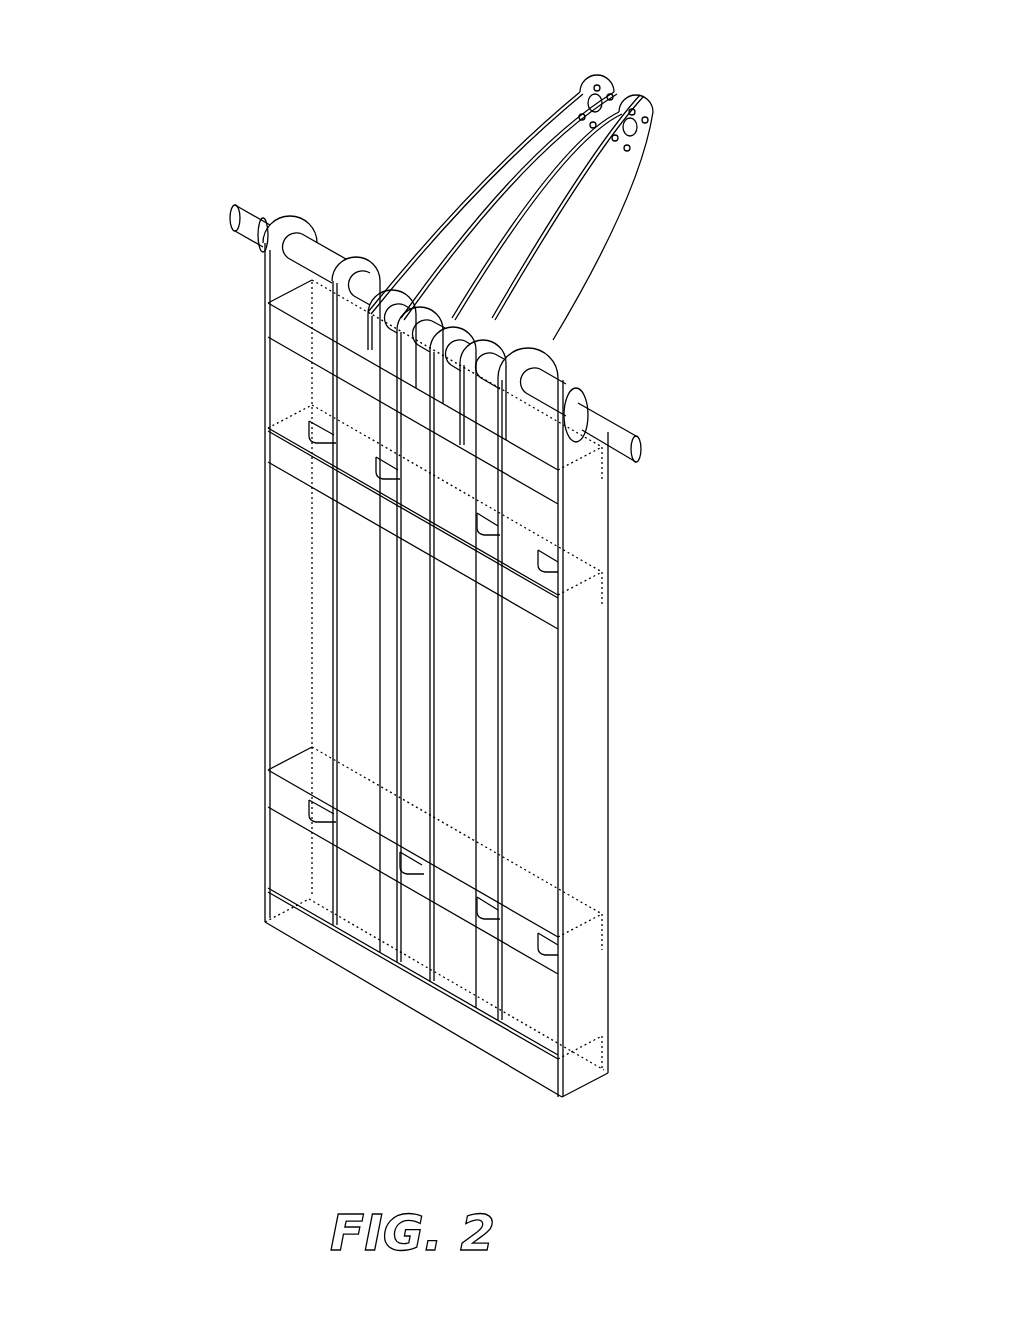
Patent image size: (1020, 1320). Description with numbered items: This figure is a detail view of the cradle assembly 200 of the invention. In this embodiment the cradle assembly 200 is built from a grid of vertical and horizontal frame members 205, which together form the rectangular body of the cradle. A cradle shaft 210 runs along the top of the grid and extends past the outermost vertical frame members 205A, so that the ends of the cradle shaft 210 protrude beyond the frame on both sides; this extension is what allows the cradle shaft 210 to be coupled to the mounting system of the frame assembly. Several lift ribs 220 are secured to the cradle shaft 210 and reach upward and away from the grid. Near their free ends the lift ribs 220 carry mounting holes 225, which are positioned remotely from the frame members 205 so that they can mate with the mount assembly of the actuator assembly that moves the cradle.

The cradle assembly 200 is at (453, 559).
The frame members 205 is at (438, 670).
The outermost vertical frame members 205A is at (265, 856).
The cradle shaft 210 is at (617, 433).
The lift ribs 220 is at (531, 180).
The mounting holes 225 is at (603, 80).